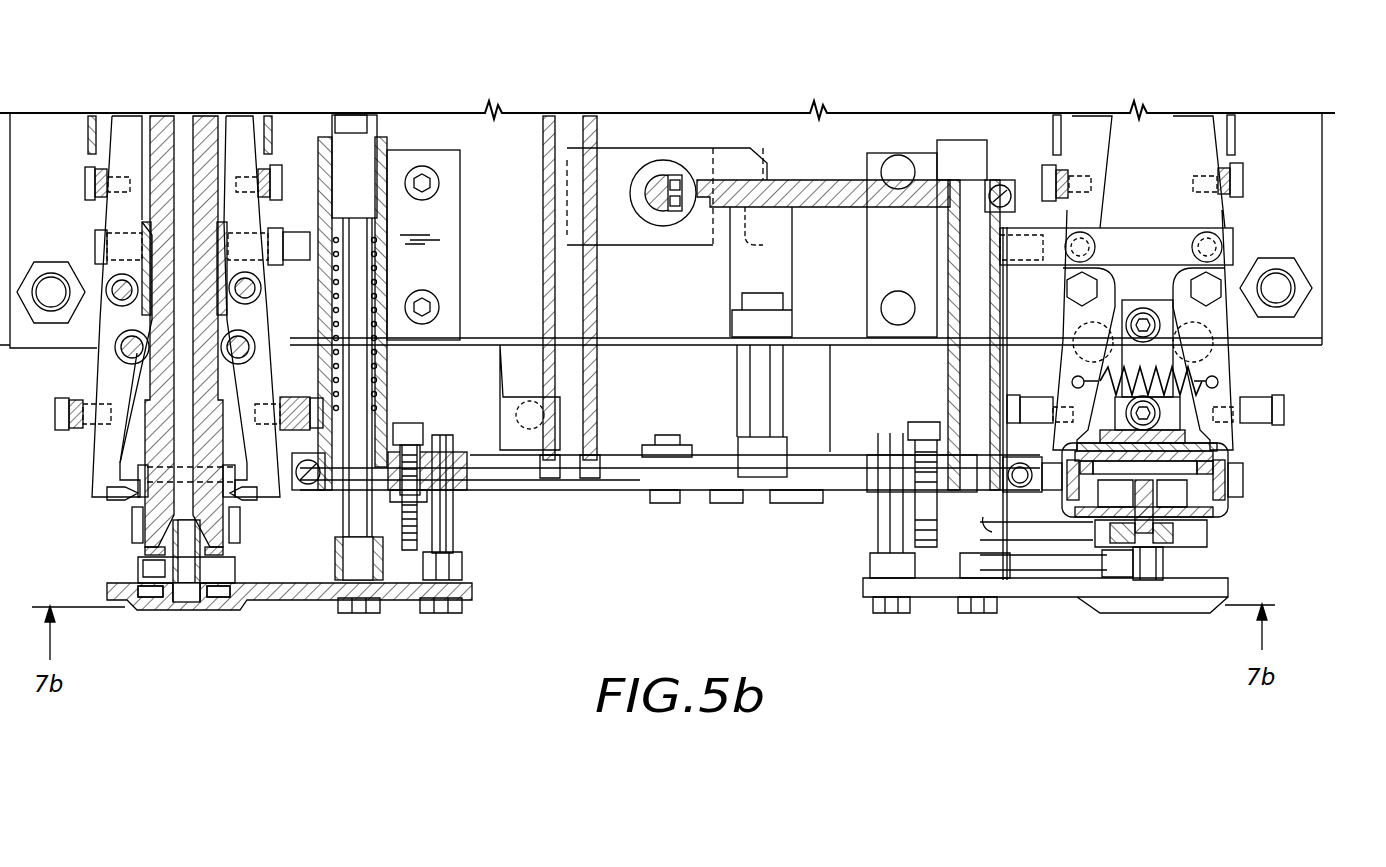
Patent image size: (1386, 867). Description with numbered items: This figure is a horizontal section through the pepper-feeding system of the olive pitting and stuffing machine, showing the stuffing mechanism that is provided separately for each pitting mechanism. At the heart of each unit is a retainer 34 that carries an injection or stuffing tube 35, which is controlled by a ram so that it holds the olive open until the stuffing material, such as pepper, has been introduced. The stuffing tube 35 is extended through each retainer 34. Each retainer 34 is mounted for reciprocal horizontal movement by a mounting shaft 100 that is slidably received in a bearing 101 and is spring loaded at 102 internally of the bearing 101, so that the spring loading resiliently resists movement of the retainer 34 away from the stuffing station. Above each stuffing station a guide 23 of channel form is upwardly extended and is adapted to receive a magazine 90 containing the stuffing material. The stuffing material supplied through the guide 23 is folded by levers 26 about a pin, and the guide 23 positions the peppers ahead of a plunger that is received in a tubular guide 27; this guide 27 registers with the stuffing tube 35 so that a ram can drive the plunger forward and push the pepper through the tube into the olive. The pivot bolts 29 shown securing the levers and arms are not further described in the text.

The guide 23 is at (1228, 455).
The levers 26 is at (123, 147).
The guide 27 is at (217, 520).
The pivot bolt 29 is at (110, 443).
The retainer 34 is at (157, 607).
The stuffing tube 35 is at (173, 547).
The magazine 90 is at (147, 473).
The mounting shaft 100 is at (350, 433).
The bearing 101 is at (389, 388).
The spring loading 102 is at (333, 285).